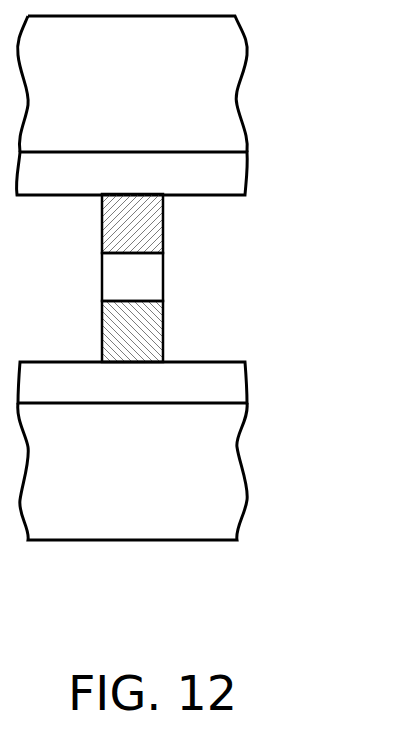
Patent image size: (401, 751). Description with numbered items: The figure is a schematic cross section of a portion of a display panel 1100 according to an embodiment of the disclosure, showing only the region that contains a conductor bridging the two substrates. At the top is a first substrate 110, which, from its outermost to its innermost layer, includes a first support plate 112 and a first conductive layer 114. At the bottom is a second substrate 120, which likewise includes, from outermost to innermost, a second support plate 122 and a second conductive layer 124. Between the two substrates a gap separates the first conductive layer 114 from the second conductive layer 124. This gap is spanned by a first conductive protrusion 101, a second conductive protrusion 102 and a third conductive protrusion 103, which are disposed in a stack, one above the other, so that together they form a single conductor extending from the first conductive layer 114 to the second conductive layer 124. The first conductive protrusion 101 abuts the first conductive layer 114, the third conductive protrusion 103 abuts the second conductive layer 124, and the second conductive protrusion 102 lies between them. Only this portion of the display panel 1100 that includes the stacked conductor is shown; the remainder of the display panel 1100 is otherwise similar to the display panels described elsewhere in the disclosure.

The first substrate 110 is at (199, 105).
The first support plate 112 is at (208, 103).
The first conductive layer 114 is at (168, 173).
The first conductive protrusion 101 is at (140, 224).
The second conductive protrusion 102 is at (140, 280).
The third conductive protrusion 103 is at (140, 336).
The second substrate 120 is at (200, 451).
The second conductive layer 124 is at (208, 383).
The second support plate 122 is at (169, 471).
The display panel 1100 is at (378, 611).